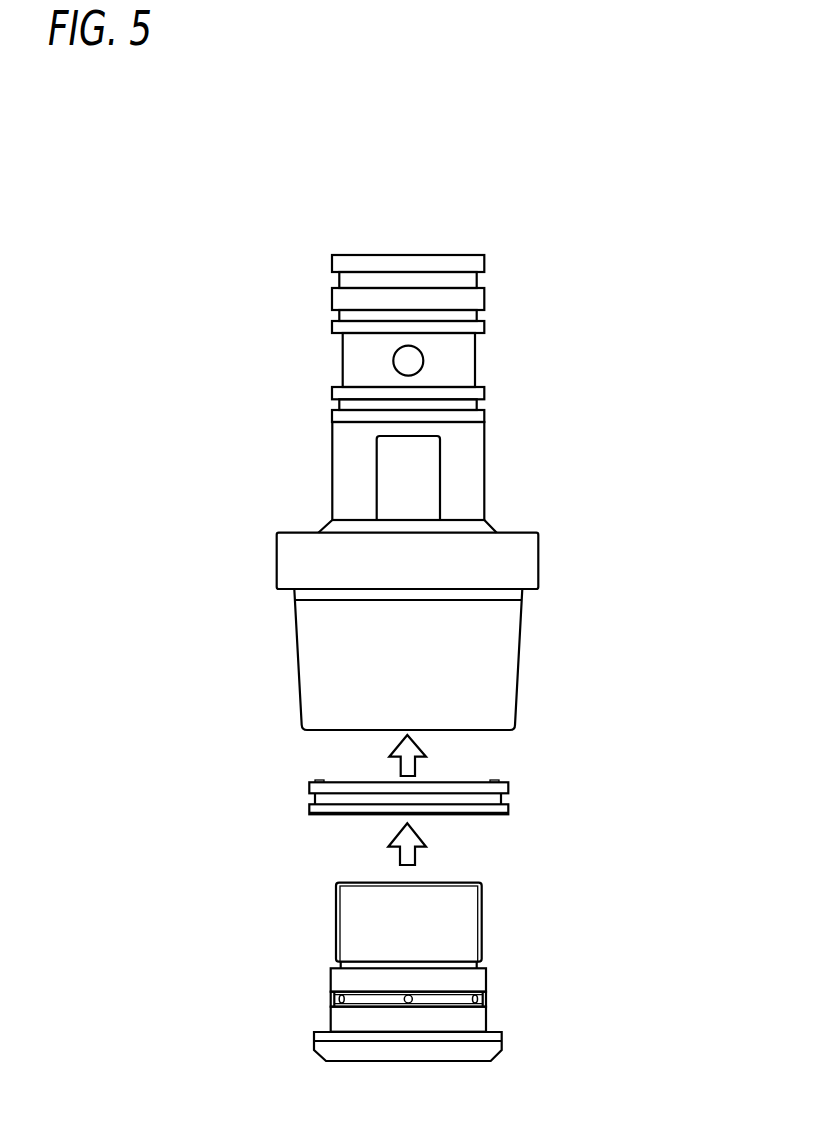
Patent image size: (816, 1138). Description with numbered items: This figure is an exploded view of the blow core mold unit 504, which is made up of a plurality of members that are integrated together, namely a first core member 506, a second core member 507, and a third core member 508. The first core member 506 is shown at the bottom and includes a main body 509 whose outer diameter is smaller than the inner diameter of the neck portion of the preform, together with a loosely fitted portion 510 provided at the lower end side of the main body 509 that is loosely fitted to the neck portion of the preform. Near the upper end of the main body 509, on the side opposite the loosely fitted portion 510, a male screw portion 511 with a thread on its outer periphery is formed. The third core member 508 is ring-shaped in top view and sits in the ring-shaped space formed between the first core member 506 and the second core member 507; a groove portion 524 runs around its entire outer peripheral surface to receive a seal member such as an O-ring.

The blow core mold unit 504 is at (615, 132).
The second core member 507 is at (577, 515).
The third core member 508 is at (575, 797).
The groove portion 524 is at (316, 799).
The first core member 506 is at (575, 988).
The male screw portion 511 is at (348, 918).
The main body 509 is at (342, 981).
The loosely fitted portion 510 is at (490, 1041).